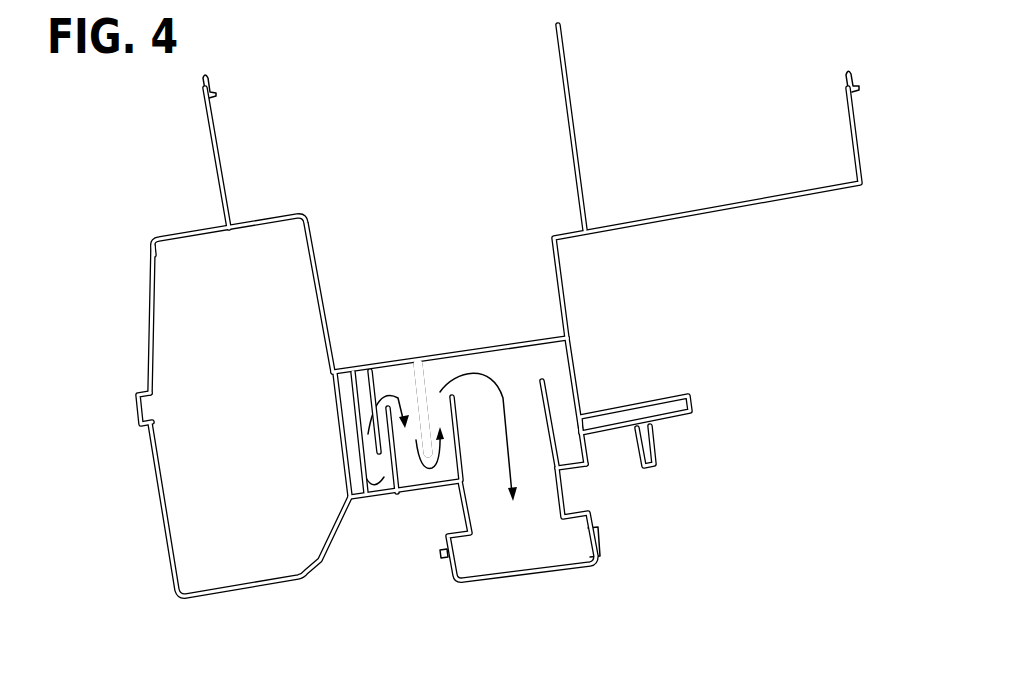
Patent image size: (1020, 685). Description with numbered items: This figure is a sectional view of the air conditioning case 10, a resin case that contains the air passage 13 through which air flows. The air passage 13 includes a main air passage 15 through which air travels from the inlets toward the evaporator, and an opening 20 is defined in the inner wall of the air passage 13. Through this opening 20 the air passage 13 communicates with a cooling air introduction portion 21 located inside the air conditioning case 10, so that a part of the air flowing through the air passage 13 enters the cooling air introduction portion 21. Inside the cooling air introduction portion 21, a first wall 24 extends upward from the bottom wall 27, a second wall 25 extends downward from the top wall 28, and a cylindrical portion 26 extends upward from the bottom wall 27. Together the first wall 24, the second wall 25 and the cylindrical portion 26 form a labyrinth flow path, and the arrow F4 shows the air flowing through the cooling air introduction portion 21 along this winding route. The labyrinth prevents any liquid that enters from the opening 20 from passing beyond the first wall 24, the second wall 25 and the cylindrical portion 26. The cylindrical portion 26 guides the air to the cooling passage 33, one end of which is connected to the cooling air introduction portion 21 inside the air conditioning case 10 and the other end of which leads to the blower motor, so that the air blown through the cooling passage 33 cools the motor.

The air conditioning case 10 is at (150, 320).
The air passage 13 is at (195, 421).
The main air passage 15 is at (195, 487).
The opening 20 is at (376, 494).
The cooling air introduction portion 21 is at (429, 384).
The first wall 24 is at (405, 478).
The second wall 25 is at (389, 371).
The cylindrical portion 26 is at (542, 408).
The bottom wall 27 is at (440, 494).
The top wall 28 is at (464, 362).
The cooling passage 33 is at (527, 553).
The arrow F4 is at (510, 462).